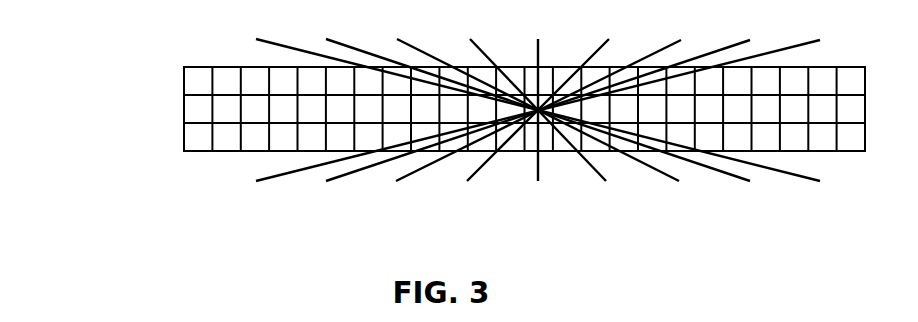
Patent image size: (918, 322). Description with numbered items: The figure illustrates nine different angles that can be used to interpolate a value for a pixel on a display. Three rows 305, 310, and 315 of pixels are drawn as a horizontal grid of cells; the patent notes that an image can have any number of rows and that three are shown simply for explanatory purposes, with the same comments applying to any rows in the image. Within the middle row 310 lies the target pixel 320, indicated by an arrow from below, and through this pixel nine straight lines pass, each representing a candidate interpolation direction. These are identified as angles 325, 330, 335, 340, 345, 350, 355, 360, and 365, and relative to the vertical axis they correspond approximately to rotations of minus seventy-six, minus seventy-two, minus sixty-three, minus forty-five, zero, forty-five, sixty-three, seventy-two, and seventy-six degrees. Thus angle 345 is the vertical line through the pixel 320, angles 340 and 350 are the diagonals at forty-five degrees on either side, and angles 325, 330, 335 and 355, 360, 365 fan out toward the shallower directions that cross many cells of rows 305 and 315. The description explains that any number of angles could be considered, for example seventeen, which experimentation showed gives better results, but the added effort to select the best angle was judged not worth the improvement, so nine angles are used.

The row 305 is at (140, 81).
The row 310 is at (140, 109).
The row 315 is at (140, 137).
The pixel 320 is at (530, 126).
The angle 325 is at (528, 97).
The angle 330 is at (528, 97).
The angle 335 is at (528, 97).
The angle 340 is at (528, 97).
The angle 345 is at (538, 97).
The angle 350 is at (548, 97).
The angle 355 is at (548, 97).
The angle 360 is at (548, 97).
The angle 365 is at (548, 97).